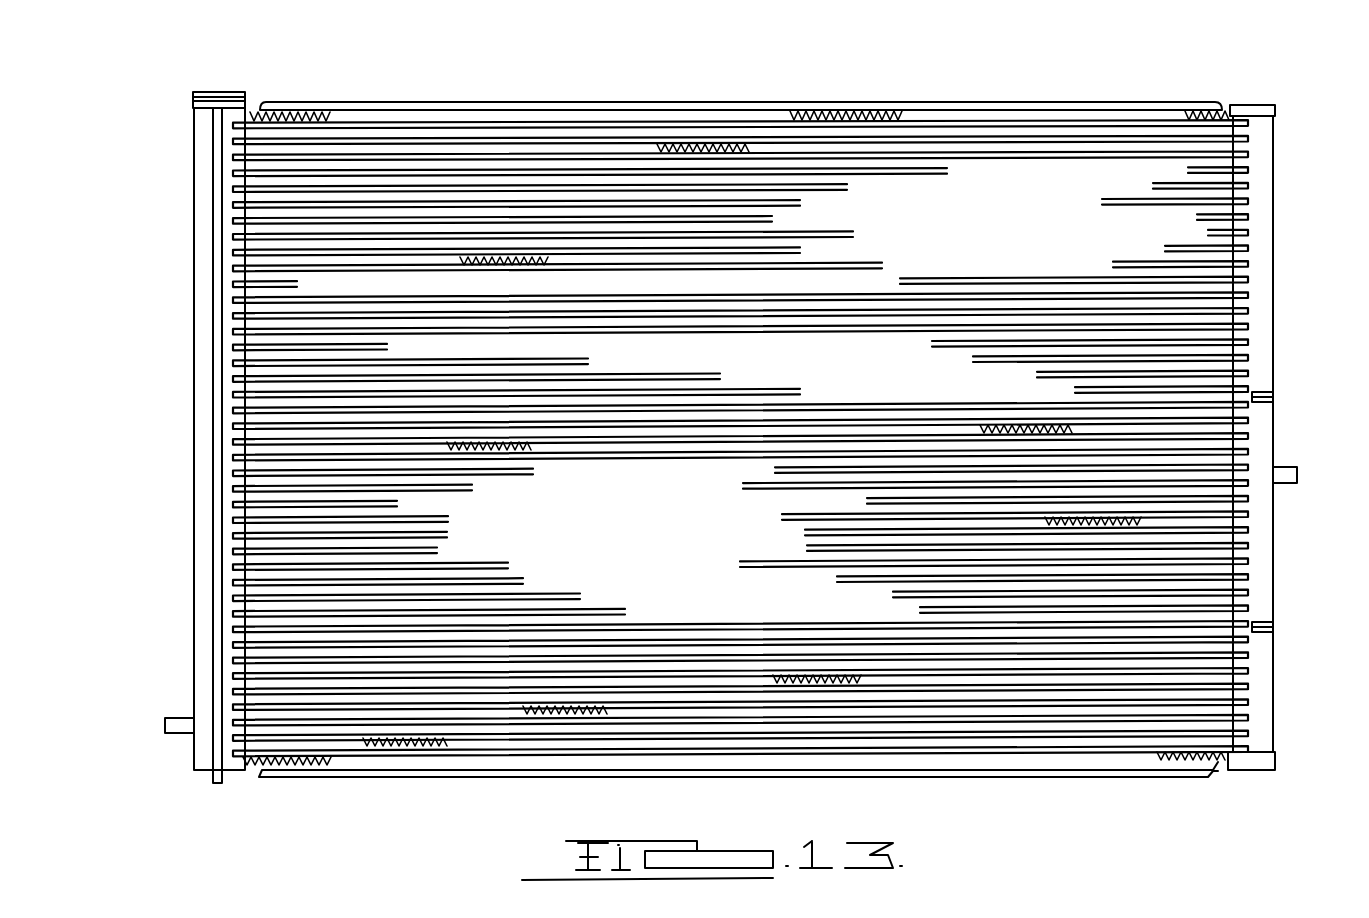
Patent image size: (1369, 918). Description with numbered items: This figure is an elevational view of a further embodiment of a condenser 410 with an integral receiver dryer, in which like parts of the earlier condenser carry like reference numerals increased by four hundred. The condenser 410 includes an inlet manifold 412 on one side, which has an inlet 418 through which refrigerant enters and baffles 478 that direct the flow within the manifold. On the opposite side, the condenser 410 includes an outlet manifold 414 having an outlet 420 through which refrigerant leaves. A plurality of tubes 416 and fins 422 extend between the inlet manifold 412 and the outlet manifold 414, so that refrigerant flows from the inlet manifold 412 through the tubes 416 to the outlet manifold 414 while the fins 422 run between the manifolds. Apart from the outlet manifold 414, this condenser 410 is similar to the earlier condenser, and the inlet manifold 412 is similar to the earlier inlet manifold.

The condenser 410 is at (137, 120).
The inlet manifold 412 is at (1280, 236).
The outlet manifold 414 is at (190, 320).
The tubes 416 is at (467, 150).
The inlet 418 is at (1288, 470).
The outlet 420 is at (172, 724).
The fins 422 is at (820, 114).
The baffles 478 is at (1268, 392).